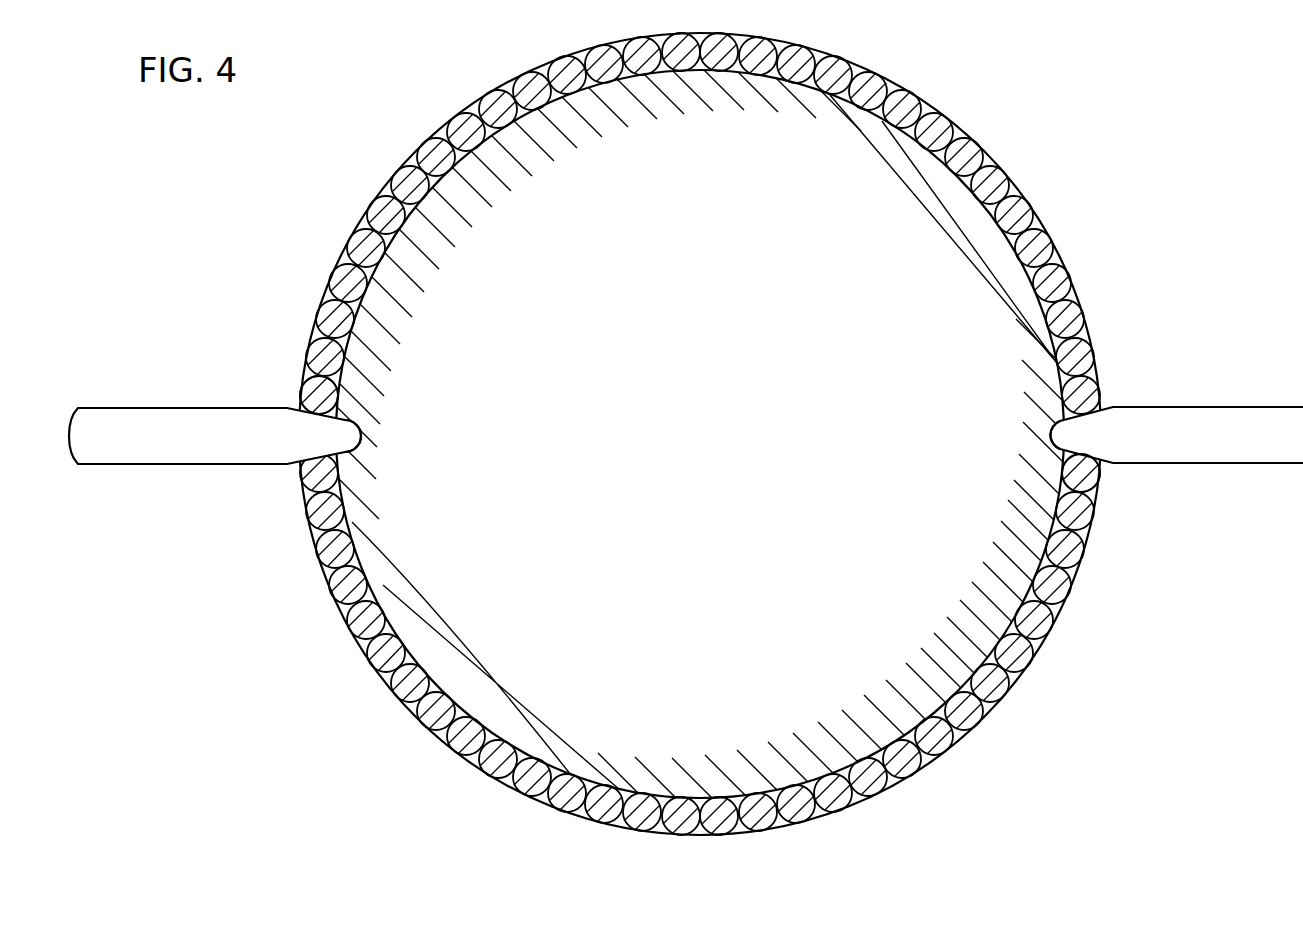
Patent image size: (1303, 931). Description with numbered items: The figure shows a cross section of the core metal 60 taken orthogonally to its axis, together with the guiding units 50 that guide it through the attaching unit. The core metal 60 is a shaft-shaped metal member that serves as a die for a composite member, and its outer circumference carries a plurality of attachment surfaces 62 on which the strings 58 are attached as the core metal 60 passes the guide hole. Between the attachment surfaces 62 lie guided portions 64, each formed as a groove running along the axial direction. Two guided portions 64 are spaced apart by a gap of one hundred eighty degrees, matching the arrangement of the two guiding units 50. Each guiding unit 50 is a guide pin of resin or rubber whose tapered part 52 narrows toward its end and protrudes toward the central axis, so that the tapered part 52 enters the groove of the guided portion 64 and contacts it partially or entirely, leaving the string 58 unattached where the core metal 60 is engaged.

The guiding unit 50 is at (147, 420).
The tapered part 52 is at (315, 397).
The string 58 is at (432, 153).
The core metal 60 is at (457, 597).
The attachment surface 62 is at (360, 292).
The guided portion 64 is at (345, 437).